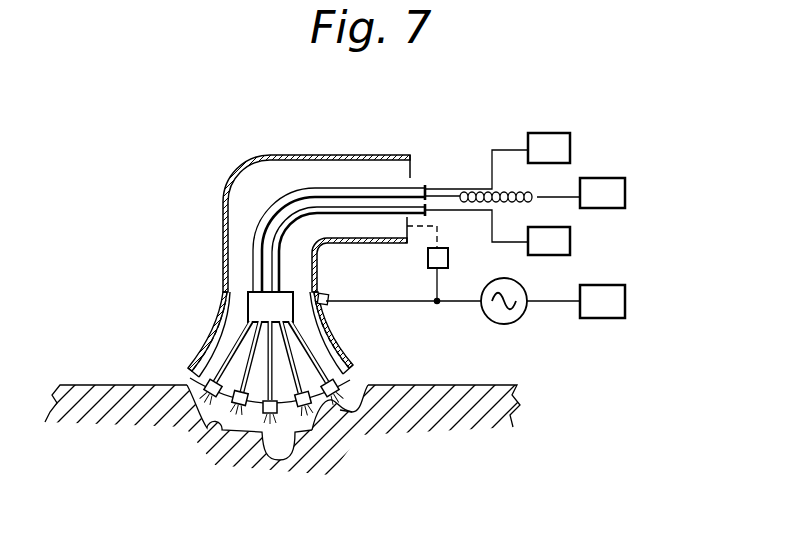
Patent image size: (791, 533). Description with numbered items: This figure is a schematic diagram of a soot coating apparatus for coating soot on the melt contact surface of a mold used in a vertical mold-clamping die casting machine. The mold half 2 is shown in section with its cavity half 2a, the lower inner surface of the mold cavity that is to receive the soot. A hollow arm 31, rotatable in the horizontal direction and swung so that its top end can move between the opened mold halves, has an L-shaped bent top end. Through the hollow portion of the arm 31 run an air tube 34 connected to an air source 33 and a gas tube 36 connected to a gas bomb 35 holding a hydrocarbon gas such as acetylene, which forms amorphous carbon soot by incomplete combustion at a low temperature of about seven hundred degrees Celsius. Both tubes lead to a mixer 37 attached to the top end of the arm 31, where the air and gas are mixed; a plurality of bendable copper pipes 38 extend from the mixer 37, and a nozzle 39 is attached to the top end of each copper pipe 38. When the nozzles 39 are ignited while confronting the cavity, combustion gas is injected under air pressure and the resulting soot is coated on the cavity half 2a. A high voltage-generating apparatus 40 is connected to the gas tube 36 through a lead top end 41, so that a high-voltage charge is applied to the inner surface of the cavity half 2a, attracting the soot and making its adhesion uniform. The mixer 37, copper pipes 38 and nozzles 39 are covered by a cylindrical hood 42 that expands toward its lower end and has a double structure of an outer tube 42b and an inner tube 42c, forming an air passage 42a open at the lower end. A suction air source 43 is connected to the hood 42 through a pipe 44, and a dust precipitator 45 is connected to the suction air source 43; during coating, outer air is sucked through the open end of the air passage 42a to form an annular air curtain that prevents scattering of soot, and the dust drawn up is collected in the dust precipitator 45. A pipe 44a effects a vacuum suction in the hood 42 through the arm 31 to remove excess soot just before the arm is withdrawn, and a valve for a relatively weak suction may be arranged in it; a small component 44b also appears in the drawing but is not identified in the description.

The mold half 2 is at (90, 385).
The cavity half 2a is at (215, 432).
The hollow arm 31 is at (274, 155).
The air source 33 is at (571, 240).
The air tube 34 is at (362, 218).
The gas bomb 35 is at (555, 133).
The gas tube 36 is at (347, 187).
The mixer 37 is at (283, 292).
The bendable copper pipes 38 is at (318, 363).
The nozzle 39 is at (324, 403).
The high voltage-generating apparatus 40 is at (612, 178).
The lead top end 41 is at (533, 195).
The cylindrical hood 42 is at (188, 324).
The air passage 42a is at (324, 330).
The outer tube 42b is at (219, 340).
The inner tube 42c is at (223, 320).
The suction air source 43 is at (512, 324).
The pipe 44 is at (456, 303).
The vacuum suction pipe 44a is at (448, 238).
The switch 44b is at (449, 258).
The dust precipitator 45 is at (614, 318).